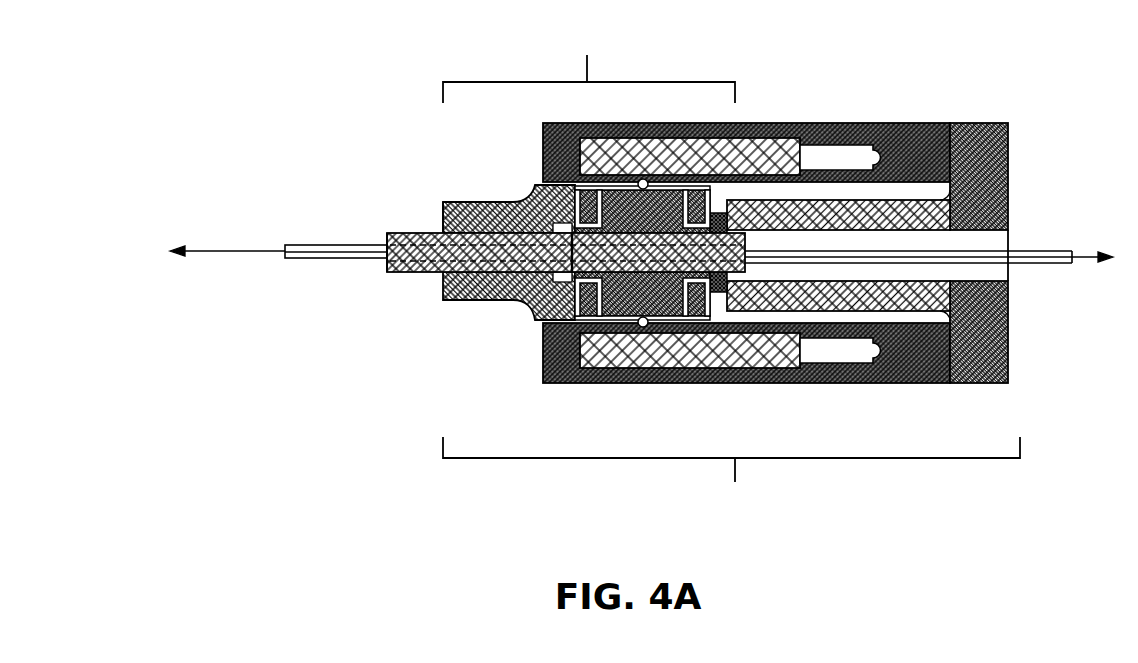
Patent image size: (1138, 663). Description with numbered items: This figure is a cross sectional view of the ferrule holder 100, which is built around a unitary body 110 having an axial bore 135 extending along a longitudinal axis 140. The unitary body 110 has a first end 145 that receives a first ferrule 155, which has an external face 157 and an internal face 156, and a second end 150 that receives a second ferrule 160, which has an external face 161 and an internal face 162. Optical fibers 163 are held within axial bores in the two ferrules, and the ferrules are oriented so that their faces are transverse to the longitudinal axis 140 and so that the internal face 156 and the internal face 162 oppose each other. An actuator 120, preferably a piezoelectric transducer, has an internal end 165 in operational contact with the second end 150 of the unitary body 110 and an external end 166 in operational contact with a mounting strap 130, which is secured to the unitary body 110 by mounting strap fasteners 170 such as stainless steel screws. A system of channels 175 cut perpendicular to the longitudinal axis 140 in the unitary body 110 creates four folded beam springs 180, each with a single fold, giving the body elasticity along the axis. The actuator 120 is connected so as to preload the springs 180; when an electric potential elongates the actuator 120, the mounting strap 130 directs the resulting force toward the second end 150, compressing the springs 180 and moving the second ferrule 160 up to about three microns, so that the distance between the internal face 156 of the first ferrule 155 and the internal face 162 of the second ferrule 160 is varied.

The ferrule holder 100 is at (731, 478).
The unitary body 110 is at (589, 65).
The actuator 120 is at (912, 206).
The mounting strap 130 is at (998, 137).
The axial bore 135 is at (466, 300).
The longitudinal axis 140 is at (258, 256).
The first end 145 is at (442, 222).
The second end 150 is at (753, 268).
The first ferrule 155 is at (413, 270).
The internal face 156 is at (570, 280).
The external face 157 is at (387, 243).
The second ferrule 160 is at (850, 207).
The external face 161 is at (818, 362).
The internal face 162 is at (508, 200).
The optical fibers 163 is at (353, 262).
The internal end 165 is at (730, 222).
The external end 166 is at (975, 210).
The mounting strap fasteners 170 is at (686, 158).
The system of channels 175 is at (585, 186).
The folded beam springs 180 is at (580, 187).